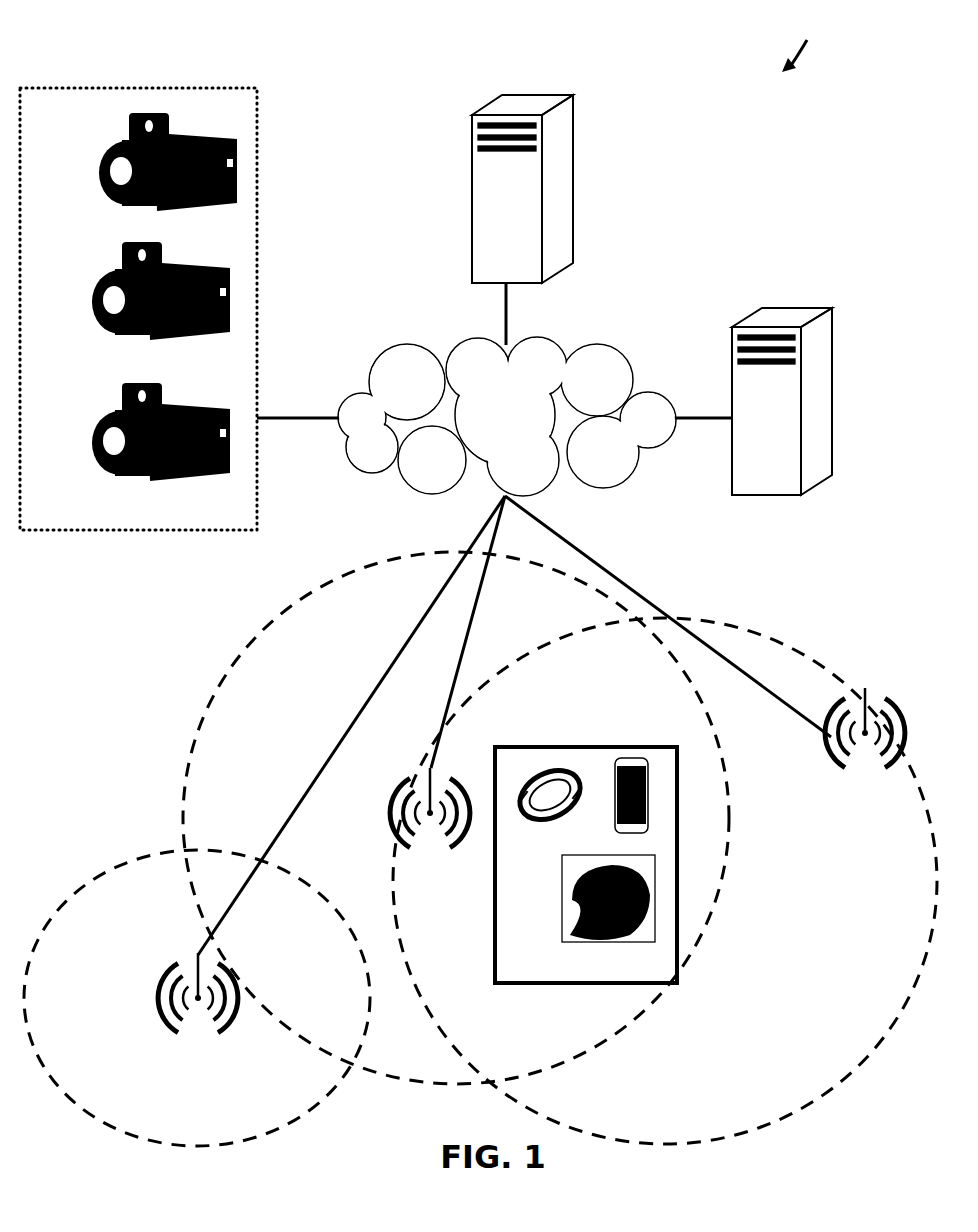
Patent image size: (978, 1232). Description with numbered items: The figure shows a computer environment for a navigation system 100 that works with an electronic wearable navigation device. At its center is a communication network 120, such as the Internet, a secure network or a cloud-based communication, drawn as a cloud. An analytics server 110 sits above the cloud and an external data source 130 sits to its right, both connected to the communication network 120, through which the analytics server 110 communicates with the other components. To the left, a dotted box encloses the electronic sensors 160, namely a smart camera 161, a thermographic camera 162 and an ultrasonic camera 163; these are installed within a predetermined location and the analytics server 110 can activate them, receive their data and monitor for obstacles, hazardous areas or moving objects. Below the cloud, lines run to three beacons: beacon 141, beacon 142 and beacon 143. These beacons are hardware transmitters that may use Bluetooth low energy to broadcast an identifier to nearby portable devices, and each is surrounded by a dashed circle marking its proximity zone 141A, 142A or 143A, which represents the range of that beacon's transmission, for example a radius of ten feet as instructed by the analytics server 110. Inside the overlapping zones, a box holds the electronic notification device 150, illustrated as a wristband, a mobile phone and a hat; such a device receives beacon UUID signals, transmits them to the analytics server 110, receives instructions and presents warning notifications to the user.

The navigation system 100 is at (806, 40).
The analytics server 110 is at (515, 164).
The communication network 120 is at (507, 416).
The external data source 130 is at (771, 426).
The beacon 141 is at (414, 802).
The proximity zone 141A is at (258, 625).
The beacon 142 is at (865, 748).
The proximity zone 142A is at (793, 648).
The beacon 143 is at (198, 1019).
The proximity zone 143A is at (96, 873).
The electronic notification device 150 is at (586, 865).
The electronic sensors 160 is at (172, 86).
The smart camera 161 is at (140, 162).
The thermographic camera 162 is at (135, 291).
The ultrasonic camera 163 is at (135, 434).